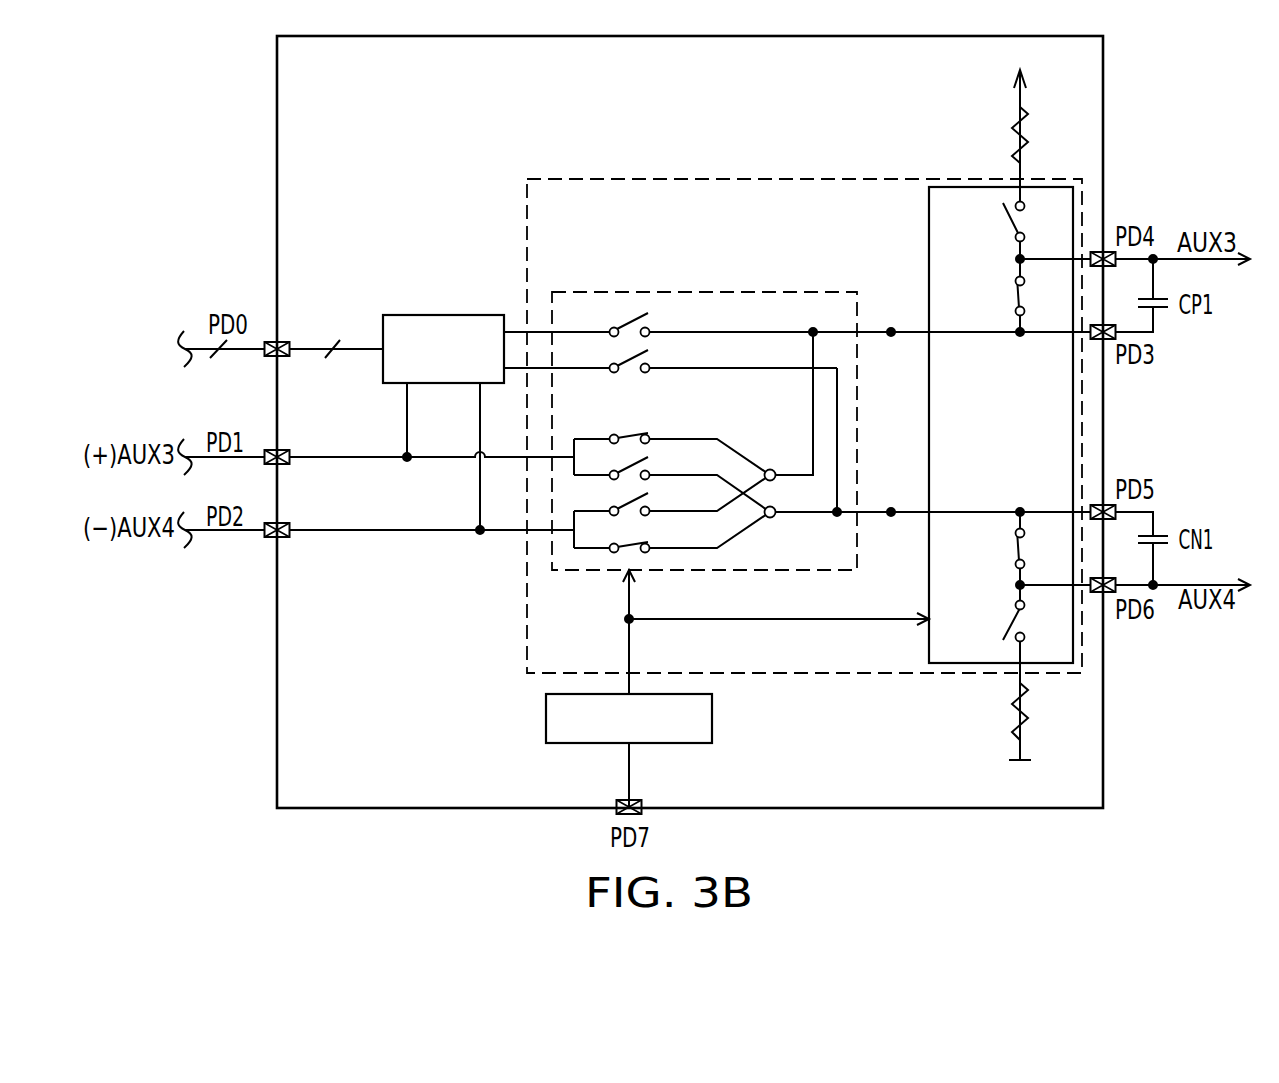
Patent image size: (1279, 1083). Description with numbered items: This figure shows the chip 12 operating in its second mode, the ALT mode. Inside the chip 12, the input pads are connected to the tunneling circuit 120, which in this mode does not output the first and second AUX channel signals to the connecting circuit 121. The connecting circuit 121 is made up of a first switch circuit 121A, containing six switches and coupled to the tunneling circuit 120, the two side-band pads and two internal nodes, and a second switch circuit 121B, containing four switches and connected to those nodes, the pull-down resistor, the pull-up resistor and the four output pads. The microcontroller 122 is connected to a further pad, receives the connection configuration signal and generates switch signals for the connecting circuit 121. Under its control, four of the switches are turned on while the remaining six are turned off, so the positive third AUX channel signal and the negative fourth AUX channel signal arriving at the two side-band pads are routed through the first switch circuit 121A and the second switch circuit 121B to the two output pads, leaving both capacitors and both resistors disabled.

The chip 12 is at (315, 790).
The tunneling circuit 120 is at (443, 315).
The connecting circuit 121 is at (706, 179).
The switch circuit 121A is at (620, 292).
The switch circuit 121B is at (929, 254).
The microcontroller 122 is at (712, 718).